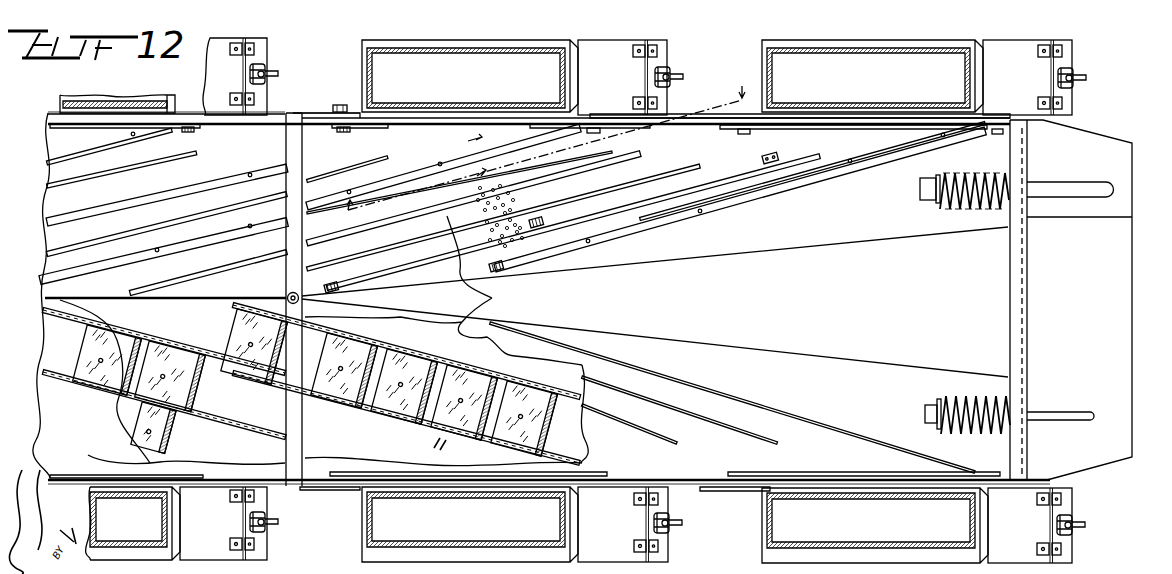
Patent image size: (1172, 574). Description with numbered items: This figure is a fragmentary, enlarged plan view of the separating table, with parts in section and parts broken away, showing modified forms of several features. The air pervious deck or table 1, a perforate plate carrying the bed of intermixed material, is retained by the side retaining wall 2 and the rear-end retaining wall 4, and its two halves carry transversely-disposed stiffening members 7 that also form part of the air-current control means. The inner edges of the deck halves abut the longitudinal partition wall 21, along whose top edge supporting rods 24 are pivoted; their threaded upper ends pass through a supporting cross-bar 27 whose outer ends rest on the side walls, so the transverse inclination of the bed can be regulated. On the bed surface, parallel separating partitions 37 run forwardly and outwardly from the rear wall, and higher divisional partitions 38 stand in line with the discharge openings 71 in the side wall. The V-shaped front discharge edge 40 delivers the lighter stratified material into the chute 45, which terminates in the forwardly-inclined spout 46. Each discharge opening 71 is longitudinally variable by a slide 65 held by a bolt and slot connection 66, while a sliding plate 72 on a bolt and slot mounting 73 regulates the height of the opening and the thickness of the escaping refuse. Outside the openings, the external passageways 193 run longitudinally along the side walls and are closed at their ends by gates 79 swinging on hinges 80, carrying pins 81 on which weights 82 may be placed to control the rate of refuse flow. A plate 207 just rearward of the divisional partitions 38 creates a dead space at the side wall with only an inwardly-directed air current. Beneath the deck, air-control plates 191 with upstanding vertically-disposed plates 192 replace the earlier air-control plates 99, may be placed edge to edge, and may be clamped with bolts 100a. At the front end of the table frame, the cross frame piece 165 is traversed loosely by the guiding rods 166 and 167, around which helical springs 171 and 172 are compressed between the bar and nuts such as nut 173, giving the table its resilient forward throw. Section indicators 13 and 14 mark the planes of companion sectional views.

The deck or table 1 is at (12, 347).
The side retaining wall 2 is at (608, 118).
The rear-end retaining wall 4 is at (283, 486).
The stiffening members 7 is at (226, 338).
The section line 13- 13 is at (537, 146).
The section line 14- 14 is at (468, 158).
The partition wall 21 is at (181, 293).
The supporting rods 24 is at (292, 292).
The supporting cross-bar 27 is at (285, 150).
The separating partitions 37 is at (121, 166).
The divisional partitions 38 is at (199, 243).
The front discharge edge 40 is at (722, 207).
The chute 45 is at (655, 302).
The spout 46 is at (1117, 330).
The slides 65 is at (318, 112).
The bolt and slot connections 66 is at (343, 104).
The discharge opening 71 is at (426, 107).
The sliding plates 72 is at (386, 128).
The bolt and slot mountings 73 is at (341, 133).
The gates 79 is at (268, 56).
The hinge 80 is at (258, 99).
The pins 81 is at (279, 74).
The weights 82 is at (268, 82).
The air-control plates 99 is at (471, 366).
The bolts 100a is at (446, 422).
The cross frame piece 165 is at (1018, 270).
The guiding and spring-supporting rod 166 is at (1076, 182).
The guiding and spring-supporting rod 167 is at (1082, 396).
The helical spring 171 is at (968, 200).
The helical spring 172 is at (986, 398).
The nut 173 is at (919, 193).
The air-control plates 191 is at (366, 346).
The vertically-disposed plates 192 is at (396, 360).
The external passageways 193 is at (471, 60).
The plate 207 is at (526, 137).